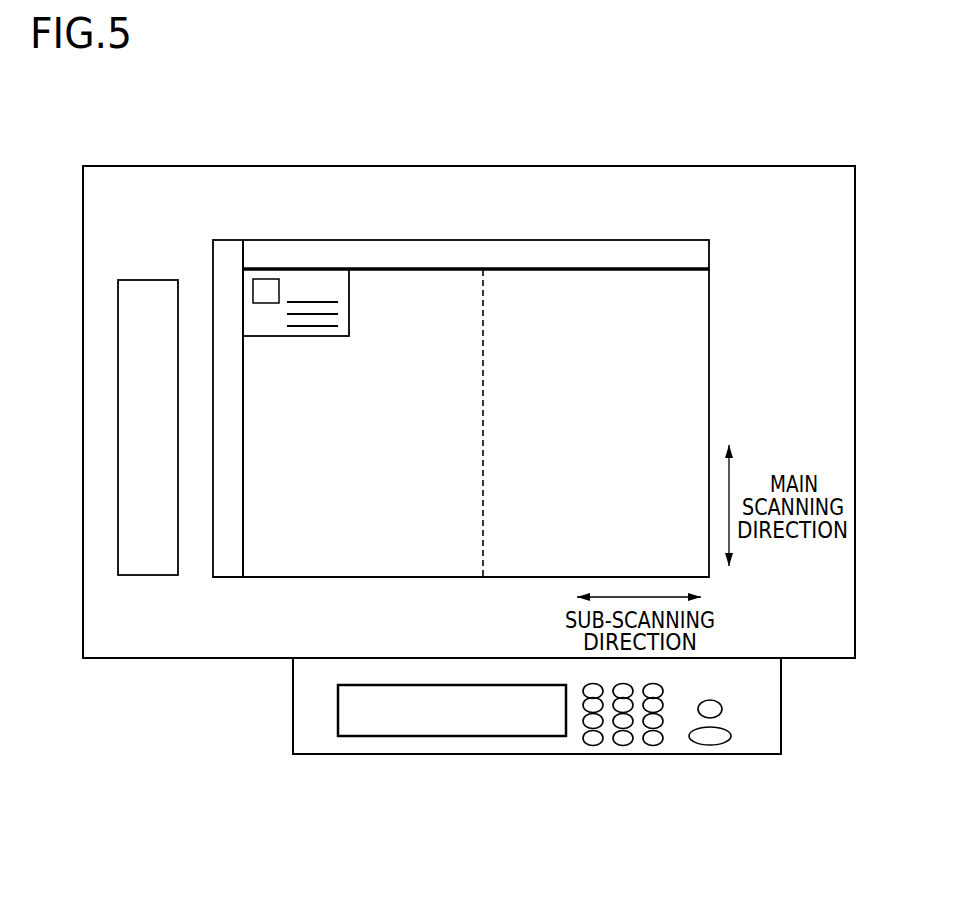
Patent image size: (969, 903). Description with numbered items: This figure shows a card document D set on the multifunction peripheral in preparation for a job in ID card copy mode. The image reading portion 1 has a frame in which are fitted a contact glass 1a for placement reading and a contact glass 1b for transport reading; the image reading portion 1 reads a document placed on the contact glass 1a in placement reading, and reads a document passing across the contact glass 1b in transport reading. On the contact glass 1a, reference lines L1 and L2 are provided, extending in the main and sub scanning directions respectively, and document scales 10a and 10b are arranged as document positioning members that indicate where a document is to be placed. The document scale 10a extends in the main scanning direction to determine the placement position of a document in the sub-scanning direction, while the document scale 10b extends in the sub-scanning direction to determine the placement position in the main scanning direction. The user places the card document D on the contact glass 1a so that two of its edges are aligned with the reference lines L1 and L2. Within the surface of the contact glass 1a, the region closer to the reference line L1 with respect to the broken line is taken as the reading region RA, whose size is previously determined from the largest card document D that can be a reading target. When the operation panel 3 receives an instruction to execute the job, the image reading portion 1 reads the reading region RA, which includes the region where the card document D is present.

The image reading portion 1 is at (177, 161).
The contact glass for placement reading 1a is at (463, 567).
The contact glass for transport reading 1b is at (147, 565).
The document scale 10a is at (229, 565).
The document scale 10b is at (679, 255).
The reference line L1 is at (244, 366).
The reference line L2 is at (358, 272).
The card document D is at (316, 337).
The reading region RA is at (398, 455).
The operation panel 3 is at (787, 740).